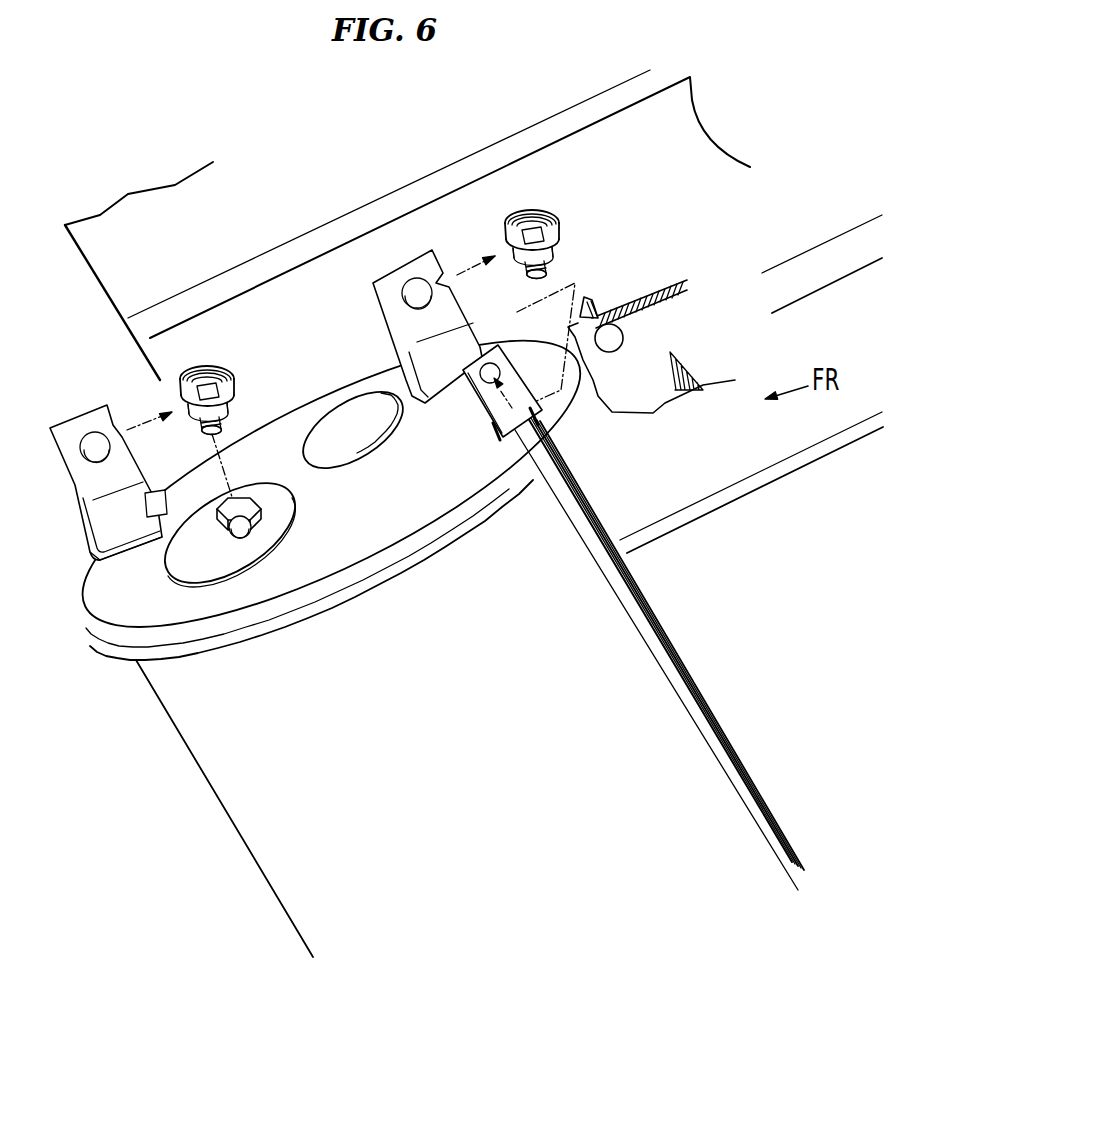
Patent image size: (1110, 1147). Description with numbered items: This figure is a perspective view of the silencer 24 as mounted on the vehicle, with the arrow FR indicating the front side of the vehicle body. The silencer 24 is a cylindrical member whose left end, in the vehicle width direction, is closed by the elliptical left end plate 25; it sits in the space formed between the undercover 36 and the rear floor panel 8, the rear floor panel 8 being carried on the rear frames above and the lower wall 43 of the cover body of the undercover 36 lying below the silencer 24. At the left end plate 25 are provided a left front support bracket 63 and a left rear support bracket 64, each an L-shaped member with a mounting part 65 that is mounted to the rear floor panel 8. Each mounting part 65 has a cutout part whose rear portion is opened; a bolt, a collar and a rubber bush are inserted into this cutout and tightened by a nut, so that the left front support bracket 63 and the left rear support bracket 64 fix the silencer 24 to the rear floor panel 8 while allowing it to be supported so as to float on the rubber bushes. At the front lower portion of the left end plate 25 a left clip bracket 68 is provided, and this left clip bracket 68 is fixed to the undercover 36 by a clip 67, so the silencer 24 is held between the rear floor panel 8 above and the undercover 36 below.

The rear floor panel 8 is at (833, 512).
The silencer 24 is at (615, 645).
The left end plate 25 is at (283, 472).
The undercover 36 is at (647, 382).
The lower wall 43 is at (627, 392).
The left front support bracket 63 is at (127, 540).
The left rear support bracket 64 is at (445, 382).
The mounting part 65 is at (80, 480).
The clip 67 is at (613, 340).
The left clip bracket 68 is at (503, 427).